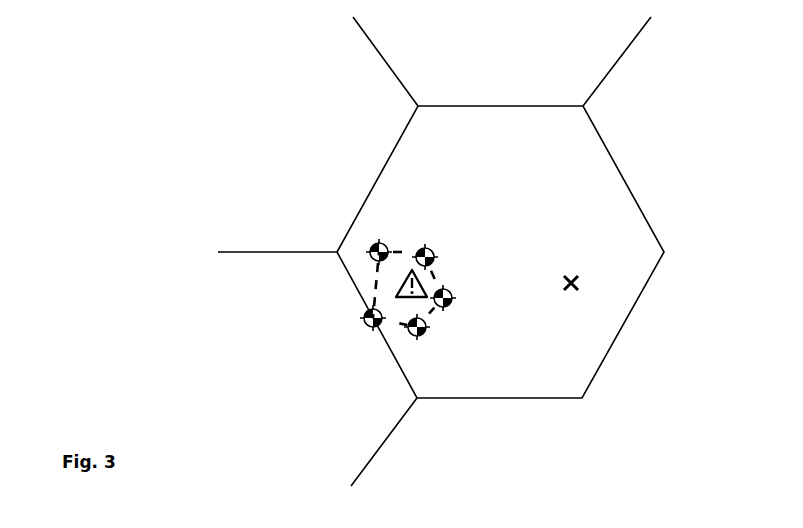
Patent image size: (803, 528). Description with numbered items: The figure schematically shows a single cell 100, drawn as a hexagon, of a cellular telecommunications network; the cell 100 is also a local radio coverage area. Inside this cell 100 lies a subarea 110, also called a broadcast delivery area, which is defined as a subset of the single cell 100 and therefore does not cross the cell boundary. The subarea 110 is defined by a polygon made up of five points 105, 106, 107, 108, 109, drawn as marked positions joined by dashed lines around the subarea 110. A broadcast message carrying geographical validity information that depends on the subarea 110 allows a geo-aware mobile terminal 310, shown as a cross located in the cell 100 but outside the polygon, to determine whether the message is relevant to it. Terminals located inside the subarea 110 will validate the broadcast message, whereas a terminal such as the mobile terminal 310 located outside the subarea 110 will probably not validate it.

The cell 100 is at (615, 160).
The point 105 is at (437, 234).
The point 106 is at (456, 282).
The point 107 is at (433, 333).
The point 108 is at (365, 335).
The point 109 is at (381, 235).
The subarea 110 is at (393, 283).
The geo-aware mobile terminal 310 is at (588, 271).